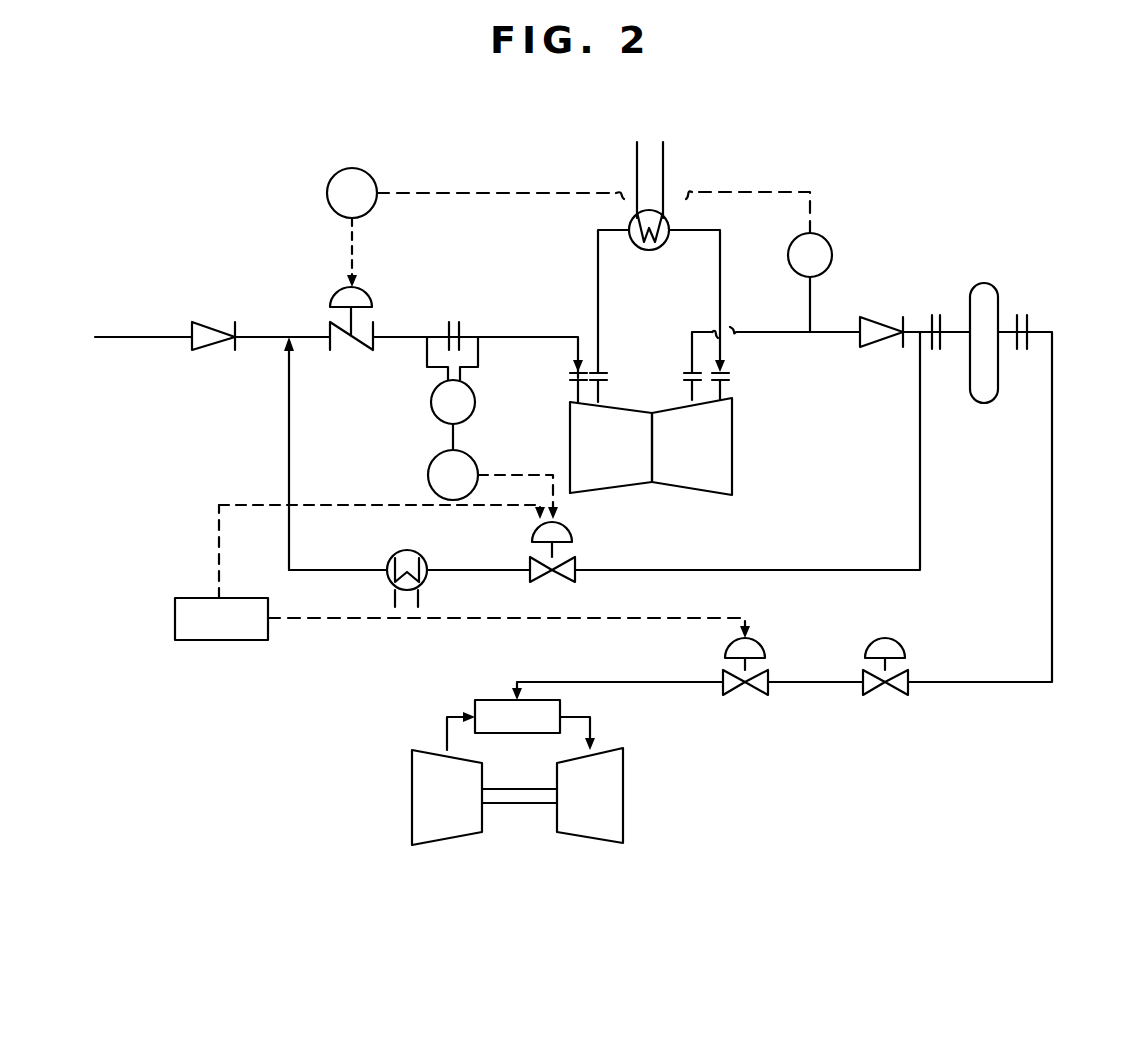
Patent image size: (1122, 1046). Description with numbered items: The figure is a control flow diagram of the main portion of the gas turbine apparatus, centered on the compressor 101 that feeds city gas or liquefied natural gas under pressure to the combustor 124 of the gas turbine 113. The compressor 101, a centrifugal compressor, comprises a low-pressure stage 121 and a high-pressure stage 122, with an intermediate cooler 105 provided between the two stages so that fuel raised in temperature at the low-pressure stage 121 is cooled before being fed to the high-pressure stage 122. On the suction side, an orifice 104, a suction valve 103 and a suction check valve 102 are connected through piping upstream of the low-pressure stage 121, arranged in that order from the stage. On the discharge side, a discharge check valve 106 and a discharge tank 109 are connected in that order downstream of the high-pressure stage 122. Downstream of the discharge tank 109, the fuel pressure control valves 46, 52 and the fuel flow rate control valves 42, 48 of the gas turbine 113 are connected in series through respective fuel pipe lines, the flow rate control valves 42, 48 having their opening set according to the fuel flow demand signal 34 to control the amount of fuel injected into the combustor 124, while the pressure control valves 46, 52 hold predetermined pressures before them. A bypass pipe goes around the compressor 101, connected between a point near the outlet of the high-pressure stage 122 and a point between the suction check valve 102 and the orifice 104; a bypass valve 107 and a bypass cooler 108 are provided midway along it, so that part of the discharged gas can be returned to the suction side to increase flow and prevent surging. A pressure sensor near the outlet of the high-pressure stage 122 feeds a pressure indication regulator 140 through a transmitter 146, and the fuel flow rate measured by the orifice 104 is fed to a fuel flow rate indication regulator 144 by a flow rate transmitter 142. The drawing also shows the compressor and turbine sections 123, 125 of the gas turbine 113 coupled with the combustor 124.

The fuel flow demand signal 34 is at (190, 598).
The fuel flow rate control valve 42 is at (790, 636).
The fuel flow rate control valve 48 is at (758, 638).
The fuel pressure control valve 46 is at (940, 647).
The fuel pressure control valve 52 is at (900, 645).
The compressor 101 is at (674, 442).
The suction check valve 102 is at (210, 322).
The suction valve 103 is at (360, 287).
The orifice 104 is at (465, 322).
The intermediate cooler 105 is at (668, 222).
The discharge check valve 106 is at (880, 317).
The bypass valve 107 is at (572, 528).
The bypass cooler 108 is at (420, 555).
The discharge tank 109 is at (990, 283).
The gas turbine 113 is at (513, 774).
The low-pressure stage 121 is at (570, 443).
The high-pressure stage 122 is at (732, 437).
The compressor 123 is at (412, 770).
The combustor 124 is at (490, 700).
The turbine 125 is at (623, 768).
The pressure indication regulator 140 is at (372, 175).
The flow rate transmitter 142 is at (475, 400).
The fuel flow rate indication regulator 144 is at (428, 470).
The transmitter 146 is at (828, 240).